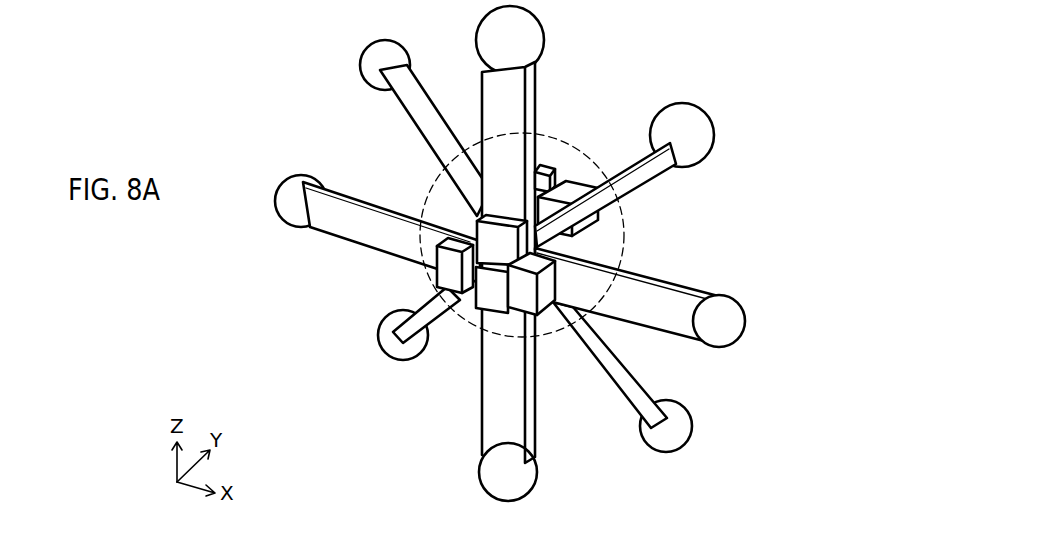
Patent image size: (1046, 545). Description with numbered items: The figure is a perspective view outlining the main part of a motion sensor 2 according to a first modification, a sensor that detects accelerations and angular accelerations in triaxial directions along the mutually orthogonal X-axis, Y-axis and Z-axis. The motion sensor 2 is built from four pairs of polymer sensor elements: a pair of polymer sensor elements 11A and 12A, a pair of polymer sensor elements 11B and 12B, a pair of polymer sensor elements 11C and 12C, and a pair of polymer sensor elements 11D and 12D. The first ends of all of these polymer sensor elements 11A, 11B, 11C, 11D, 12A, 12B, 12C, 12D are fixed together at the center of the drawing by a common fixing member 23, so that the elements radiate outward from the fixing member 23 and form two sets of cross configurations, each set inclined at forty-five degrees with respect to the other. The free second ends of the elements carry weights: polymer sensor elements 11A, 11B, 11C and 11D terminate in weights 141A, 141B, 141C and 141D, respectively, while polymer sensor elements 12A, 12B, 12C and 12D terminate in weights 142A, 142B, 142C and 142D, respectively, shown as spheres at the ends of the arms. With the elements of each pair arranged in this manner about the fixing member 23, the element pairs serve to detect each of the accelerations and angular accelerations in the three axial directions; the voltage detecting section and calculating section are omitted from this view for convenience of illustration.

The motion sensor 2 is at (741, 56).
The polymer sensor element 11A is at (357, 198).
The polymer sensor element 11B is at (532, 427).
The polymer sensor element 11C is at (425, 308).
The polymer sensor element 11D is at (427, 100).
The polymer sensor element 12A is at (677, 290).
The polymer sensor element 12B is at (535, 100).
The polymer sensor element 12C is at (632, 158).
The polymer sensor element 12D is at (635, 362).
The weight 141A is at (277, 203).
The weight 141B is at (532, 472).
The weight 141C is at (404, 358).
The weight 141D is at (372, 58).
The weight 142A is at (733, 320).
The weight 142B is at (534, 32).
The weight 142C is at (703, 133).
The weight 142D is at (683, 432).
The common fixing member 23 is at (627, 230).